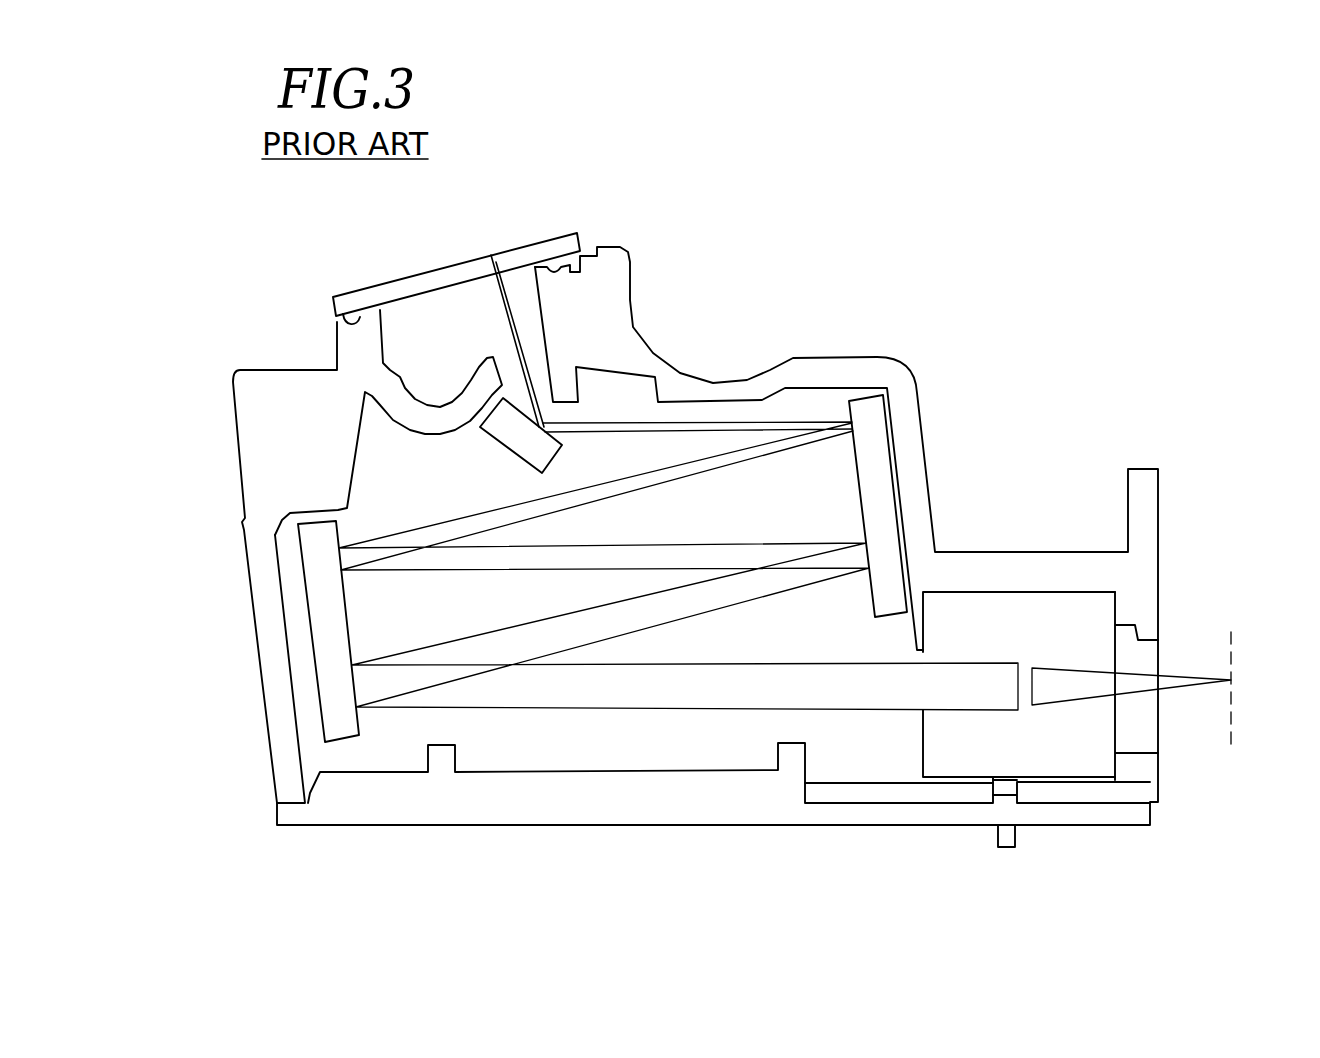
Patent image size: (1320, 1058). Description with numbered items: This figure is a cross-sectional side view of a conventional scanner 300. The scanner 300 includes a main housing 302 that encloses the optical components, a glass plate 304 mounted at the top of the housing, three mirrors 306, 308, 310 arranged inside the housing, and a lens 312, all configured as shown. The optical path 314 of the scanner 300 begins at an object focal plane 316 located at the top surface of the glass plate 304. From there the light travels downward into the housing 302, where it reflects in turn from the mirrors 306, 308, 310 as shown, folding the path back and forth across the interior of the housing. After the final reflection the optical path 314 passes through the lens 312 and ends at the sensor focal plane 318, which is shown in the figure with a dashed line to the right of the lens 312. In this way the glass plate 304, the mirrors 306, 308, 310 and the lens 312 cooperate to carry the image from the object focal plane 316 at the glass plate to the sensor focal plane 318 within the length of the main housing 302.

The scanner 300 is at (726, 194).
The main housing 302 is at (297, 368).
The glass plate 304 is at (300, 272).
The mirror 306 is at (523, 438).
The mirror 308 is at (872, 460).
The mirror 310 is at (322, 627).
The lens 312 is at (1043, 614).
The optical path 314 is at (528, 347).
The object focal plane 316 is at (528, 238).
The sensor focal plane 318 is at (1232, 642).